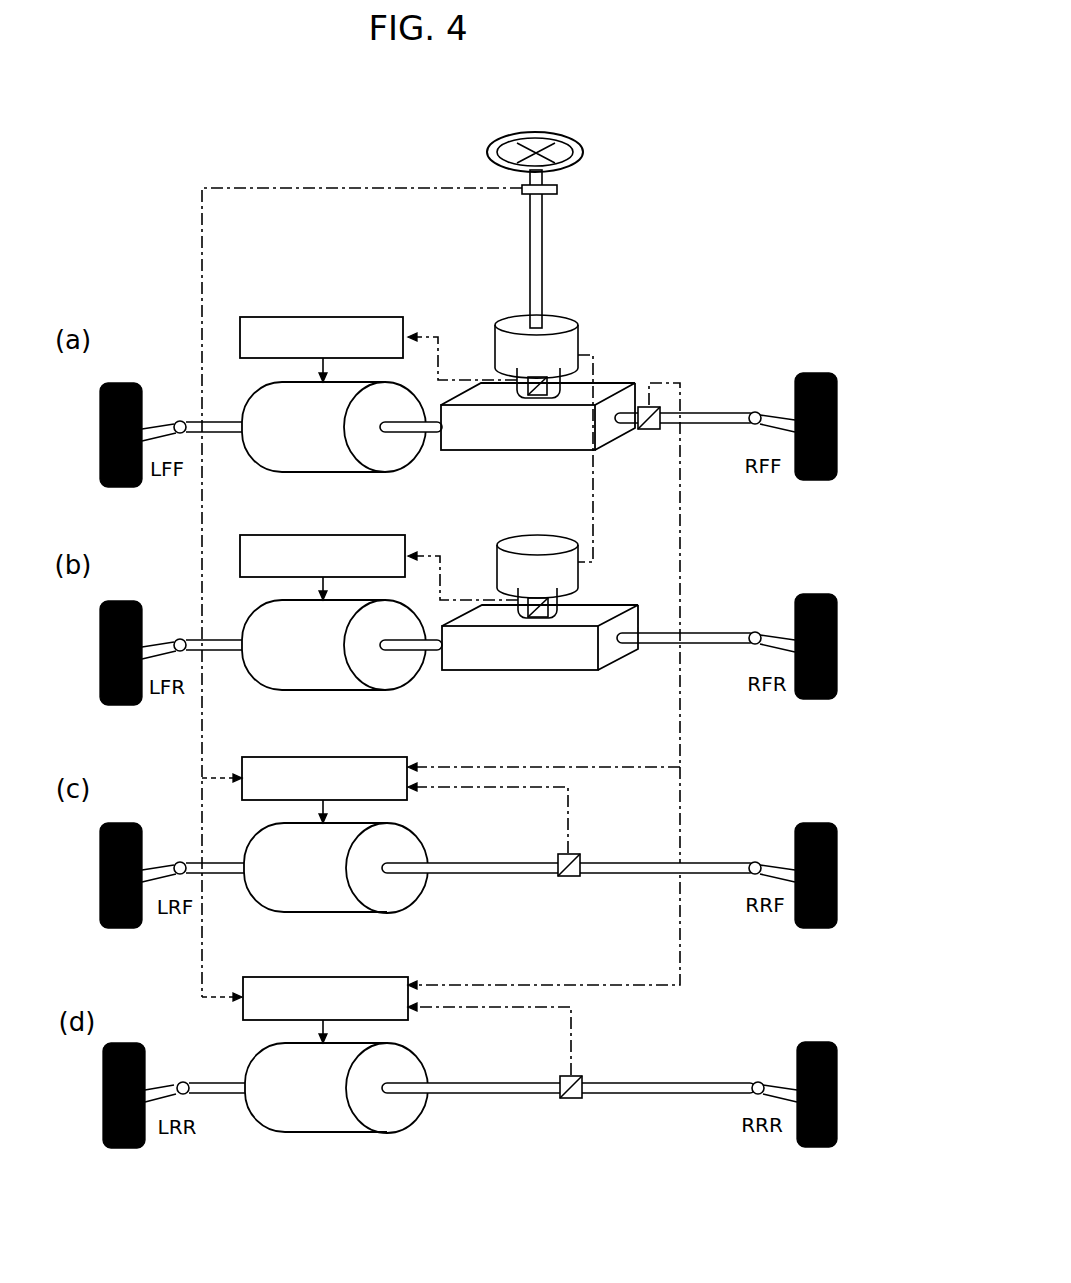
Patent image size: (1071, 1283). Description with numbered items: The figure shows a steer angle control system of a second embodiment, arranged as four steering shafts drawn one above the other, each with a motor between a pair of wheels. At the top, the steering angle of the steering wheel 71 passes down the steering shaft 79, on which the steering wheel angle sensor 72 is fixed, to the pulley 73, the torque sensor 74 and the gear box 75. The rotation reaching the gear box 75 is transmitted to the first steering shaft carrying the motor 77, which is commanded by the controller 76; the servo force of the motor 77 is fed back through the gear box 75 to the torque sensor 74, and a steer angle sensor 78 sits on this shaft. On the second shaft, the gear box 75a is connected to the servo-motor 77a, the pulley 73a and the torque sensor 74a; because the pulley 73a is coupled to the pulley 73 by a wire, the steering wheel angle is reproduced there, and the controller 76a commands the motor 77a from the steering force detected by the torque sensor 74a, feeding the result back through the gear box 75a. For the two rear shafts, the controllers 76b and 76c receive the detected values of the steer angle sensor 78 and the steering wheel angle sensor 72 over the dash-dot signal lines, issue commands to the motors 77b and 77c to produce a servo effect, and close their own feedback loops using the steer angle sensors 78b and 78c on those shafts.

The steering wheel 71 is at (583, 150).
The steering wheel angle sensor 72 is at (557, 189).
The steering shaft 79 is at (542, 268).
The pulley 73 is at (578, 332).
The torque sensor 74 is at (560, 388).
The gear box 75 is at (548, 452).
The controller 76 is at (370, 317).
The motor 77 is at (400, 450).
The steer angle sensor 78 is at (649, 429).
The pulley 73a is at (578, 552).
The torque sensor 74a is at (557, 608).
The gear box 75a is at (550, 672).
The controller 76a is at (291, 535).
The servo-motor 77a is at (400, 668).
The controller 76b is at (292, 757).
The motor 77b is at (403, 890).
The steer angle sensor 78b is at (569, 876).
The controller 76c is at (290, 977).
The motor 77c is at (403, 1110).
The steer angle sensor 78c is at (571, 1098).